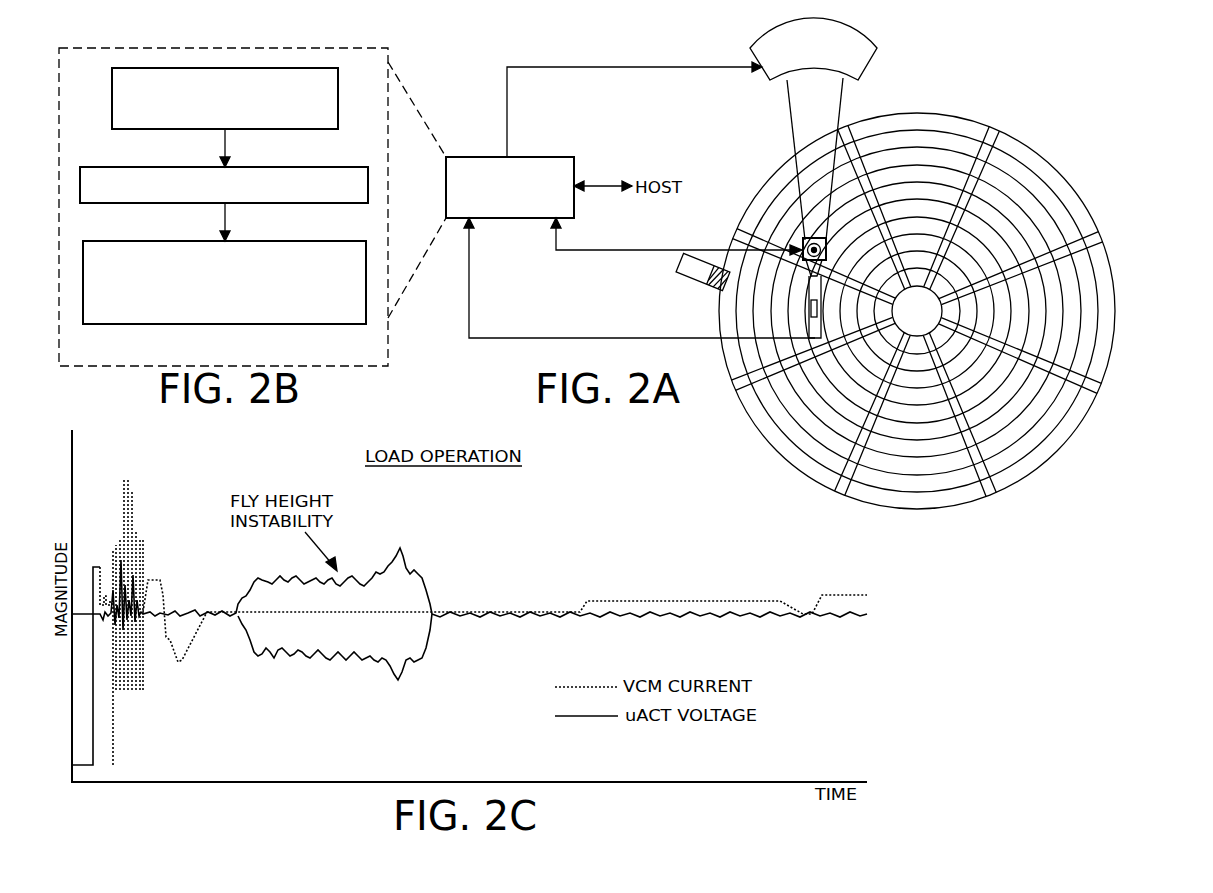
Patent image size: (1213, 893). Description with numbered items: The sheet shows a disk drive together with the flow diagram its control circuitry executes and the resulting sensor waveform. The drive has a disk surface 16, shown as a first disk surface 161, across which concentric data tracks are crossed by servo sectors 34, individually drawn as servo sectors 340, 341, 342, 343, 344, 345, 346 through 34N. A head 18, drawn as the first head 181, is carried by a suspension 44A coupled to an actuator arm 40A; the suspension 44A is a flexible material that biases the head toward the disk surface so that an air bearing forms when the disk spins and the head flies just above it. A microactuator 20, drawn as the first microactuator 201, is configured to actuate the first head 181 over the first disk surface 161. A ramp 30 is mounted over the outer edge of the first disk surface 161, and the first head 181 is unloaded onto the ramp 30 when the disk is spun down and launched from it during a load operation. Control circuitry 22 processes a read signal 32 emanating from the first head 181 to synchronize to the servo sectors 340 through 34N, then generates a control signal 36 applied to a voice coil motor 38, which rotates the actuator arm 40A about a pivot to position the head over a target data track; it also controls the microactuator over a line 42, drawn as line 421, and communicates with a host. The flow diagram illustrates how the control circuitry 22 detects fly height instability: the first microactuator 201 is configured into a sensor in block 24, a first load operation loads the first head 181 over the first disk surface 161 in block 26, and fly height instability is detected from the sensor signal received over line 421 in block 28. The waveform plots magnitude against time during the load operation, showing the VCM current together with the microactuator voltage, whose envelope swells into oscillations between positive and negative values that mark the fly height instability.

In FIG. 2A, the disk surface 16 is at (917, 311).
In FIG. 2A, the first disk surface 161 is at (1055, 158).
In FIG. 2A, the head 18 is at (786, 301).
In FIG. 2A, the first head 181 is at (800, 305).
In FIG. 2A, the microactuator 20 is at (843, 257).
In FIG. 2A, the first microactuator 201 is at (832, 250).
In FIG. 2A, the control circuitry 22 is at (547, 157).
In FIG. 2B, the configure microactuator into sensor block 24 is at (303, 129).
In FIG. 2B, the execute load operation block 26 is at (335, 203).
In FIG. 2B, the detect fly height instability block 28 is at (330, 324).
In FIG. 2A, the ramp 30 is at (690, 283).
In FIG. 2A, the read signal 32 is at (645, 338).
In FIG. 2A, the servo sectors 34 is at (918, 315).
In FIG. 2A, the servo sector 340 is at (994, 128).
In FIG. 2A, the servo sector 341 is at (1097, 240).
In FIG. 2A, the servo sector 342 is at (1096, 390).
In FIG. 2A, the servo sector 343 is at (985, 492).
In FIG. 2A, the servo sector 344 is at (840, 492).
In FIG. 2A, the servo sector 345 is at (737, 388).
In FIG. 2A, the servo sector 346 is at (740, 233).
In FIG. 2A, the servo sector 34N is at (848, 130).
In FIG. 2A, the control signal 36 is at (507, 99).
In FIG. 2A, the voice coil motor 38 is at (770, 80).
In FIG. 2A, the actuator arm 40A is at (800, 126).
In FIG. 2A, the microactuator line 42 is at (676, 233).
In FIG. 2A, the first microactuator line 421 is at (635, 250).
In FIG. 2A, the suspension 44A is at (828, 297).